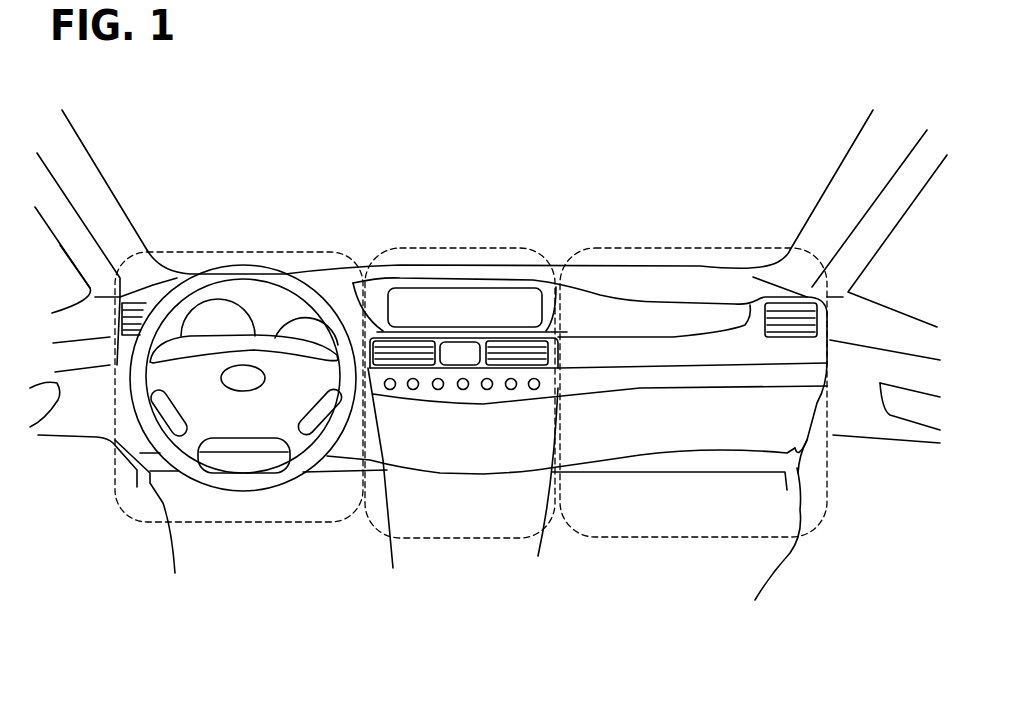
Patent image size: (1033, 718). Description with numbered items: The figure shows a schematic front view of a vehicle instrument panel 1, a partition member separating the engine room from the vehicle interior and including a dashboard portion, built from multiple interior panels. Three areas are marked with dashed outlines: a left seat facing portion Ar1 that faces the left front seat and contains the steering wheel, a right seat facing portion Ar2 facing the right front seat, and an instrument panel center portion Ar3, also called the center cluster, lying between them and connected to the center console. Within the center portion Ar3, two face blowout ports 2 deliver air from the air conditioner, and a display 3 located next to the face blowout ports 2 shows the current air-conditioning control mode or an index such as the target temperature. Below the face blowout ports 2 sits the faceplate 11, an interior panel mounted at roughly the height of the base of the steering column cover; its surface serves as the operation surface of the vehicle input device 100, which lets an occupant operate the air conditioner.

The instrument panel 1 is at (644, 348).
The face blowout port 2 is at (432, 342).
The display 3 is at (475, 342).
The faceplate 11 is at (462, 393).
The vehicle input device 100 is at (437, 428).
The left seat facing portion Ar1 is at (207, 253).
The right seat facing portion Ar2 is at (603, 250).
The instrument panel center portion Ar3 is at (393, 248).